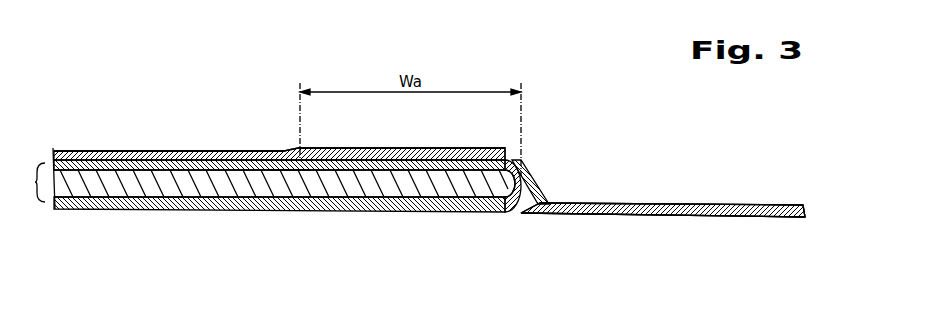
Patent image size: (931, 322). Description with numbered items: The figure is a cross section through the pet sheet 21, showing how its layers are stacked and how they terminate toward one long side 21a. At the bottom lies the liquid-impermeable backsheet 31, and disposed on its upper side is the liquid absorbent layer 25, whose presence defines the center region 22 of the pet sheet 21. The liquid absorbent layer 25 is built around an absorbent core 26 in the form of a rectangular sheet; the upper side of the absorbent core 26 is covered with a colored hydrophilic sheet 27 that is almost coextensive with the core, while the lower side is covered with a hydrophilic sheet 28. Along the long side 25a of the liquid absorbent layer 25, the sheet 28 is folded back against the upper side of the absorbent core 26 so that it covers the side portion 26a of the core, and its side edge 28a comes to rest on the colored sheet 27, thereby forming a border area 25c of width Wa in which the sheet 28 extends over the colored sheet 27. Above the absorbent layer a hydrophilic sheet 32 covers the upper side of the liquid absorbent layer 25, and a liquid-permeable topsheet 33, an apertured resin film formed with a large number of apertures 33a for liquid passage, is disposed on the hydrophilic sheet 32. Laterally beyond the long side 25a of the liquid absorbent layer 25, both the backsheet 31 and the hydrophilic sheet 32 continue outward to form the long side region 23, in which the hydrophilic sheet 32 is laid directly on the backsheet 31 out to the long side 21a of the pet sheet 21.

The pet sheet 21 is at (567, 93).
The long side 21a is at (806, 213).
The center region 22 is at (145, 136).
The long side region 23 is at (698, 201).
The liquid absorbent layer 25 is at (33, 178).
The long side of liquid absorbent layer 25a is at (526, 177).
The border area 25c is at (463, 149).
The absorbent core 26 is at (163, 184).
The side portion of absorbent core 26a is at (506, 186).
The colored hydrophilic sheet 27 is at (215, 160).
The hydrophilic sheet 28 is at (240, 199).
The side edge of sheet 28a is at (287, 176).
The liquid-impermeable backsheet 31 is at (593, 217).
The hydrophilic sheet 32 is at (645, 203).
The liquid-permeable topsheet 33 is at (67, 151).
The aperture 33a is at (107, 151).